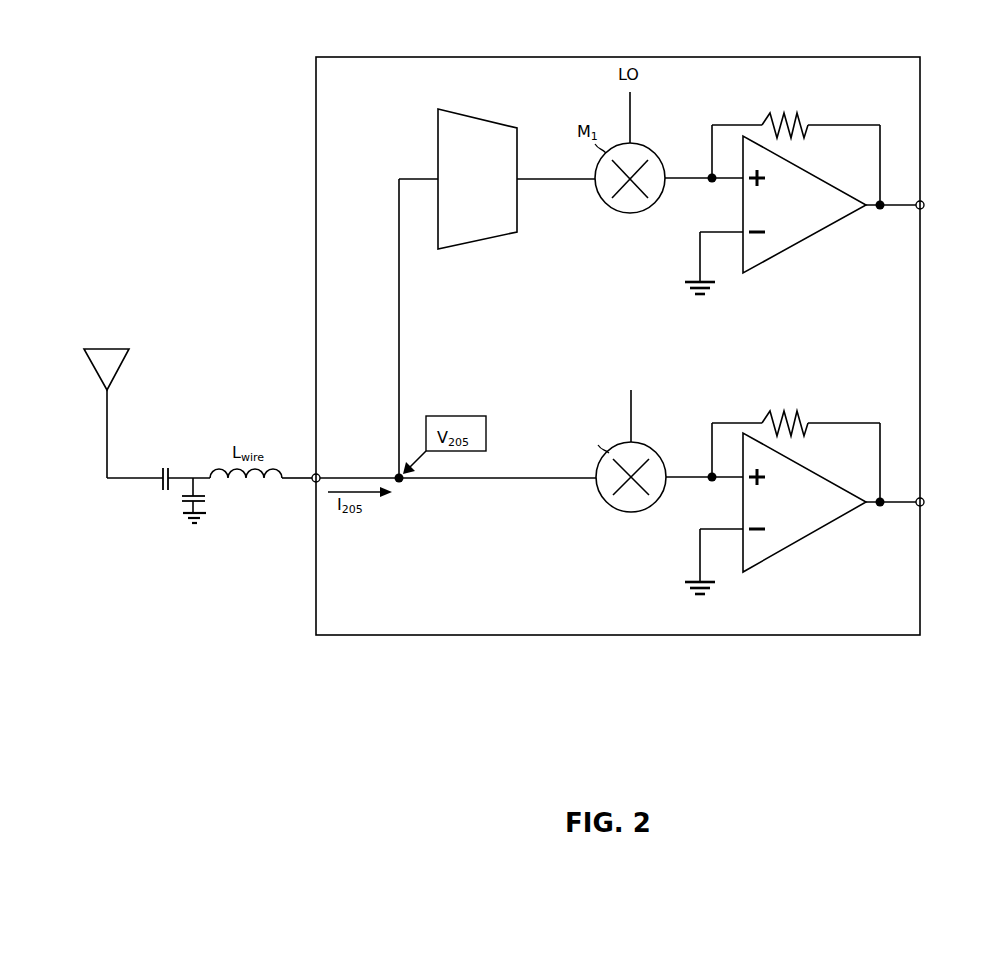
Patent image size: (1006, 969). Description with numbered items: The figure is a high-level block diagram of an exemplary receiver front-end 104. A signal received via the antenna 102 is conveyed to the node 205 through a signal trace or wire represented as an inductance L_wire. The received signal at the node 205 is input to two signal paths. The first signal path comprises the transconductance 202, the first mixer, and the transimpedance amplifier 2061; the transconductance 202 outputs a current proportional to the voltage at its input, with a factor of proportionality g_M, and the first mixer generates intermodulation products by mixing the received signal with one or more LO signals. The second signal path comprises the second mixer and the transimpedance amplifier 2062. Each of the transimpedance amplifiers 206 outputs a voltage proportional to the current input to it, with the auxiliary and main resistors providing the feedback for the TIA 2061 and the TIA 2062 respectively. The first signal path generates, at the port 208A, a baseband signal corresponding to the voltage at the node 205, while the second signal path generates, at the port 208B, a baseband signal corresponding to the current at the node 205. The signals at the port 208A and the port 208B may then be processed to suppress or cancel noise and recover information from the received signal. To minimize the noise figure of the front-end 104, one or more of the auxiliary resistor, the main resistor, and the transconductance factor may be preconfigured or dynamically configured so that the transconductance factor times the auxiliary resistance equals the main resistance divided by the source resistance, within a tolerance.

The antenna 102 is at (121, 342).
The front-end 104 is at (415, 57).
The transconductance 202 is at (496, 206).
The node 205 is at (401, 483).
The transimpedance amplifiers 206 is at (734, 342).
The transimpedance amplifier (TIA) 2061 is at (812, 225).
The transimpedance amplifier (TIA) 2062 is at (812, 523).
The port 208A is at (924, 203).
The port 208B is at (924, 500).